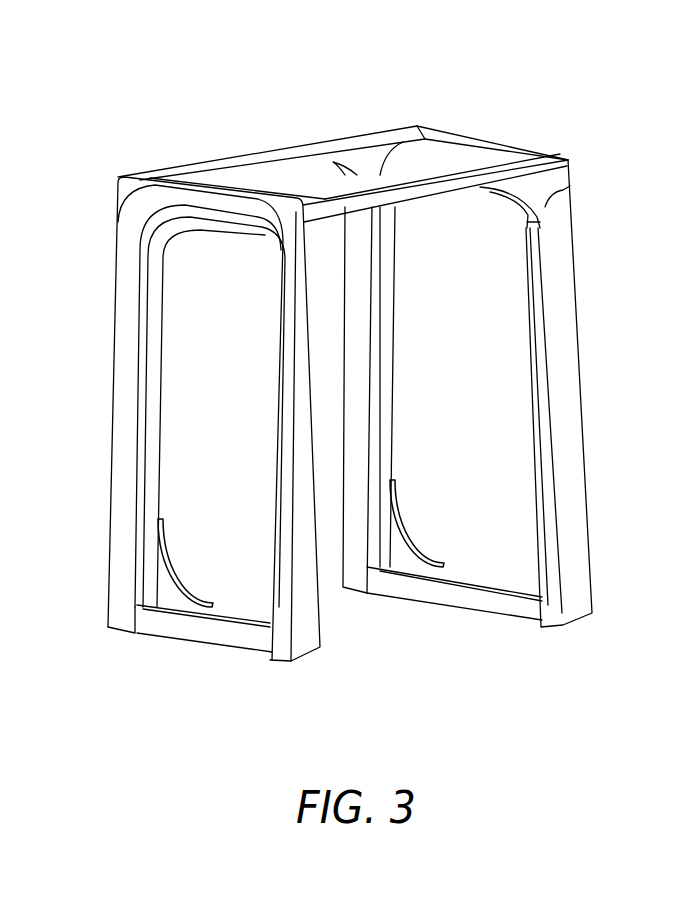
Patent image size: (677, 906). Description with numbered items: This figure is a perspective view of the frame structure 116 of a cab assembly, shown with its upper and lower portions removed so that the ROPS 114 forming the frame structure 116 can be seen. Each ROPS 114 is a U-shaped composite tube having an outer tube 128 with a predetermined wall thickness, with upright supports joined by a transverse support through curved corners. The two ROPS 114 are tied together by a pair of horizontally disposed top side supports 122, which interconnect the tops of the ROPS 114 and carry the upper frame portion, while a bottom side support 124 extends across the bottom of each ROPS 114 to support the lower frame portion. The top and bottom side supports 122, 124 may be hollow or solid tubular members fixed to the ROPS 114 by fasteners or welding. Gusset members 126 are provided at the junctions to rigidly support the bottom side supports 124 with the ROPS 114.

The frame structure 116 is at (104, 66).
The ROPS 114 is at (110, 291).
The top side support 122 is at (290, 153).
The bottom side support 124 is at (233, 617).
The gusset member 126 is at (165, 578).
The outer tube 128 is at (152, 393).